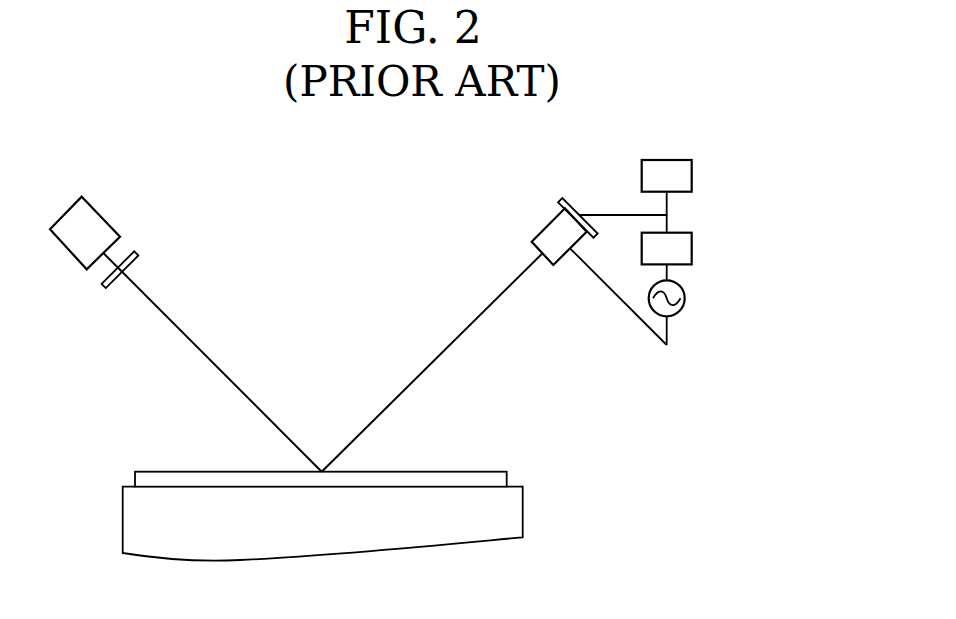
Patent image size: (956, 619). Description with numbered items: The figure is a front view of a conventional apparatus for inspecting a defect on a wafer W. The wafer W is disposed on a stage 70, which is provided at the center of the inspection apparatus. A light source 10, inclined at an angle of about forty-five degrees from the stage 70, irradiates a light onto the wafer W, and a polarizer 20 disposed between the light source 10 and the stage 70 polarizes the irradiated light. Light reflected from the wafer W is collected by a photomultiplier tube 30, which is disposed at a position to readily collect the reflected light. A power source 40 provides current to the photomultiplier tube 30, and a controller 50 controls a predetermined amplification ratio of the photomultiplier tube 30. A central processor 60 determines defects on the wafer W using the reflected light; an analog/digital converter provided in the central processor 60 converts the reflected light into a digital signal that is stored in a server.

The light source 10 is at (98, 223).
The polarizer 20 is at (136, 254).
The photomultiplier tube 30 is at (550, 233).
The power source 40 is at (683, 292).
The controller 50 is at (690, 242).
The central processor 60 is at (690, 170).
The stage 70 is at (508, 514).
The wafer W is at (498, 479).